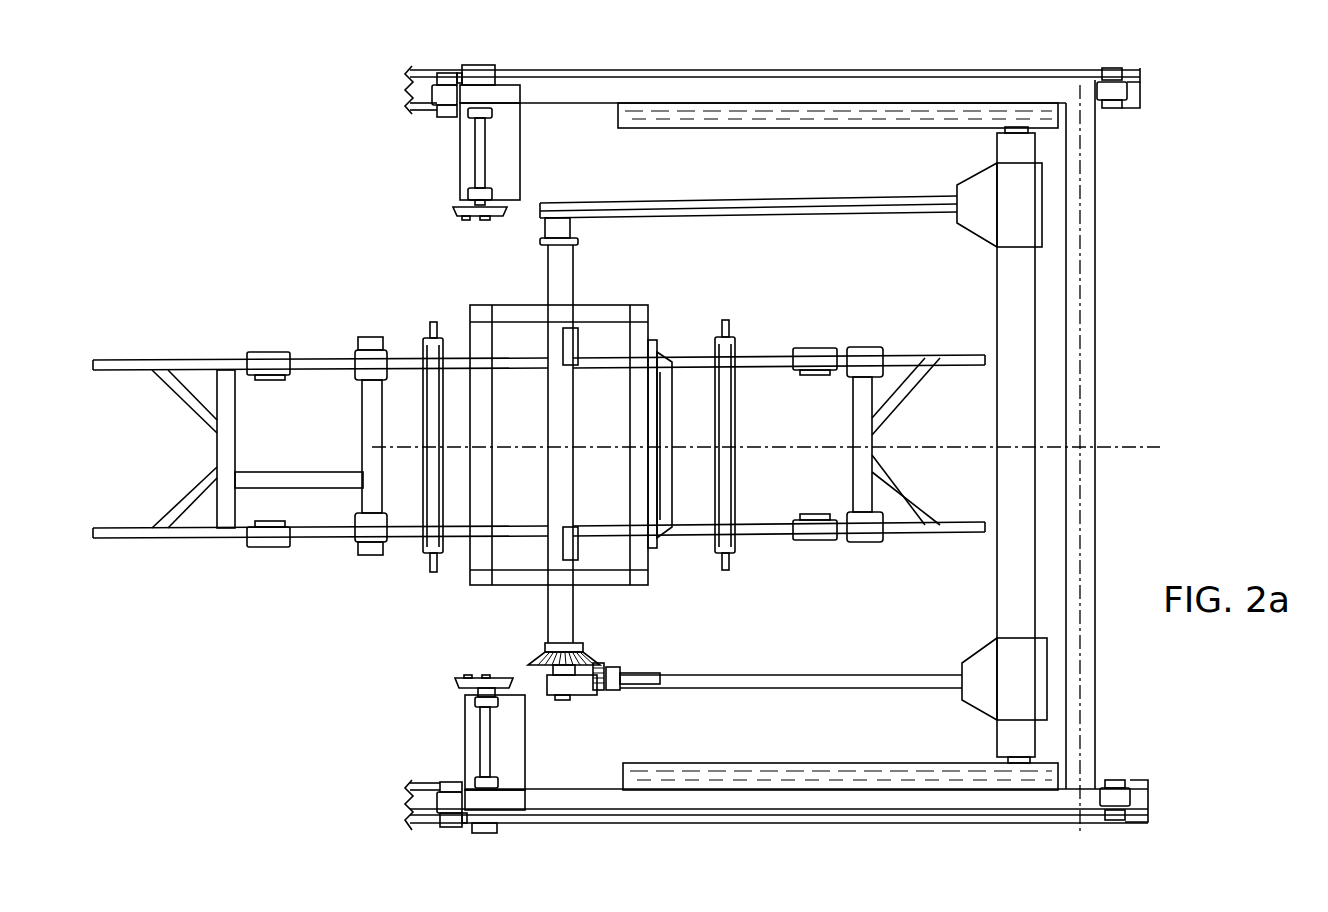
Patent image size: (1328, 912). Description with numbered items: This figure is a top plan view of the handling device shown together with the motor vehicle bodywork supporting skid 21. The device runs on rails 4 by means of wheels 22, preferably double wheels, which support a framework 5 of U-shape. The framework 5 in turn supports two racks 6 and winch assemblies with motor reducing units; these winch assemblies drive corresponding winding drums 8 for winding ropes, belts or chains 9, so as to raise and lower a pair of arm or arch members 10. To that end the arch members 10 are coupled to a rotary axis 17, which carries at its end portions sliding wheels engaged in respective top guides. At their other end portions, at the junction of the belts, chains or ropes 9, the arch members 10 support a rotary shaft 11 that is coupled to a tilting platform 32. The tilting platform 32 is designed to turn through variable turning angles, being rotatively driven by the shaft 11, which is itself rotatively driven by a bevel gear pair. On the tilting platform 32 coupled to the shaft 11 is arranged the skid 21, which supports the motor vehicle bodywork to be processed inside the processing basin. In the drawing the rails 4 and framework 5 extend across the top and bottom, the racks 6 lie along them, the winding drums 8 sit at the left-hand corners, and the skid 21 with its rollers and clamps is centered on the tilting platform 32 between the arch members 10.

The rails 4 is at (398, 86).
The framework 5 is at (900, 92).
The racks 6 is at (773, 122).
The winding drums 8 is at (452, 210).
The ropes, belts or chains 9 is at (523, 210).
The arm or arch members 10 is at (862, 213).
The rotary shaft 11 is at (573, 285).
The rotary axis 17 is at (1028, 302).
The skid 21 is at (328, 345).
The wheels 22 is at (475, 72).
The tilting platform 32 is at (640, 333).